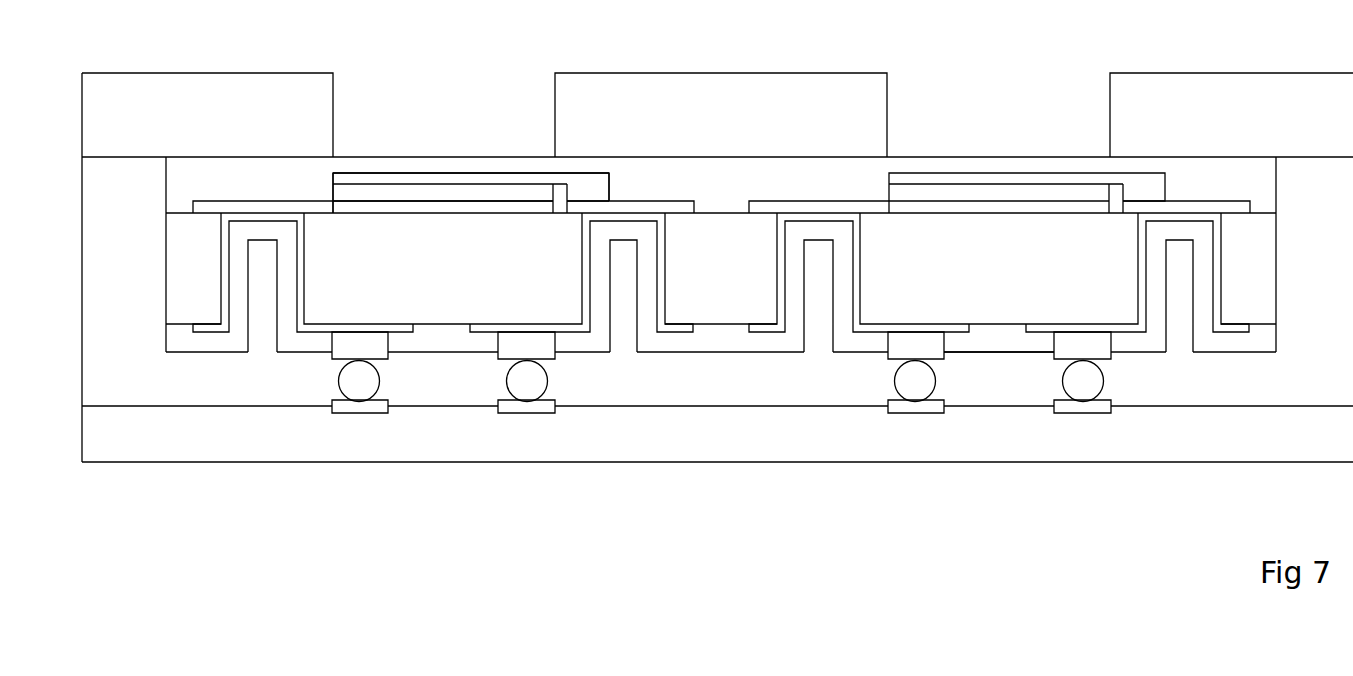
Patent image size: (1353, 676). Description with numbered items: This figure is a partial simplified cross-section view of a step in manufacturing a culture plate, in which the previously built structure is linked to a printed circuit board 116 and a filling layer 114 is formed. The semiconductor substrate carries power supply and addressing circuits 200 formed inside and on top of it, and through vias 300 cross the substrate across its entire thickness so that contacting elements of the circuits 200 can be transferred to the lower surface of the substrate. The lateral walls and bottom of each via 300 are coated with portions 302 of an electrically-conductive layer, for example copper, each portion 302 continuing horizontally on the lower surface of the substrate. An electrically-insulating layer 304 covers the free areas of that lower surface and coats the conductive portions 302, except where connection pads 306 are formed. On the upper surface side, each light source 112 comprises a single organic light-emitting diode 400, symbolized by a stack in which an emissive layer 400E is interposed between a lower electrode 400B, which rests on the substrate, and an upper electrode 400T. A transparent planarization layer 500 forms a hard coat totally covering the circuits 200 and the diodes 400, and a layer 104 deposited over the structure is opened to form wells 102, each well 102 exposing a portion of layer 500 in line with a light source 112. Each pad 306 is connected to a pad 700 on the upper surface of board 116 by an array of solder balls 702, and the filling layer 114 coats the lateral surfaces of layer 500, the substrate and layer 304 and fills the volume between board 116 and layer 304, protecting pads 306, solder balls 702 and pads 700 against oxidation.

The well 102 is at (438, 88).
The layer 104 is at (81, 123).
The light source 112 is at (371, 80).
The filling layer 114 is at (82, 285).
The printed circuit board 116 is at (82, 438).
The power supply and addressing circuits 200 is at (253, 201).
The via 300 is at (264, 354).
The conductive layer portion 302 is at (207, 333).
The electrically-insulating layer 304 is at (410, 353).
The connection pad 306 is at (333, 360).
The organic light-emitting diode 400 is at (515, 98).
The upper electrode 400T is at (462, 180).
The emissive layer 400E is at (417, 195).
The lower electrode 400B is at (380, 207).
The transparent planarization layer 500 is at (166, 187).
The pad 700 is at (362, 413).
The solder ball 702 is at (71, 367).